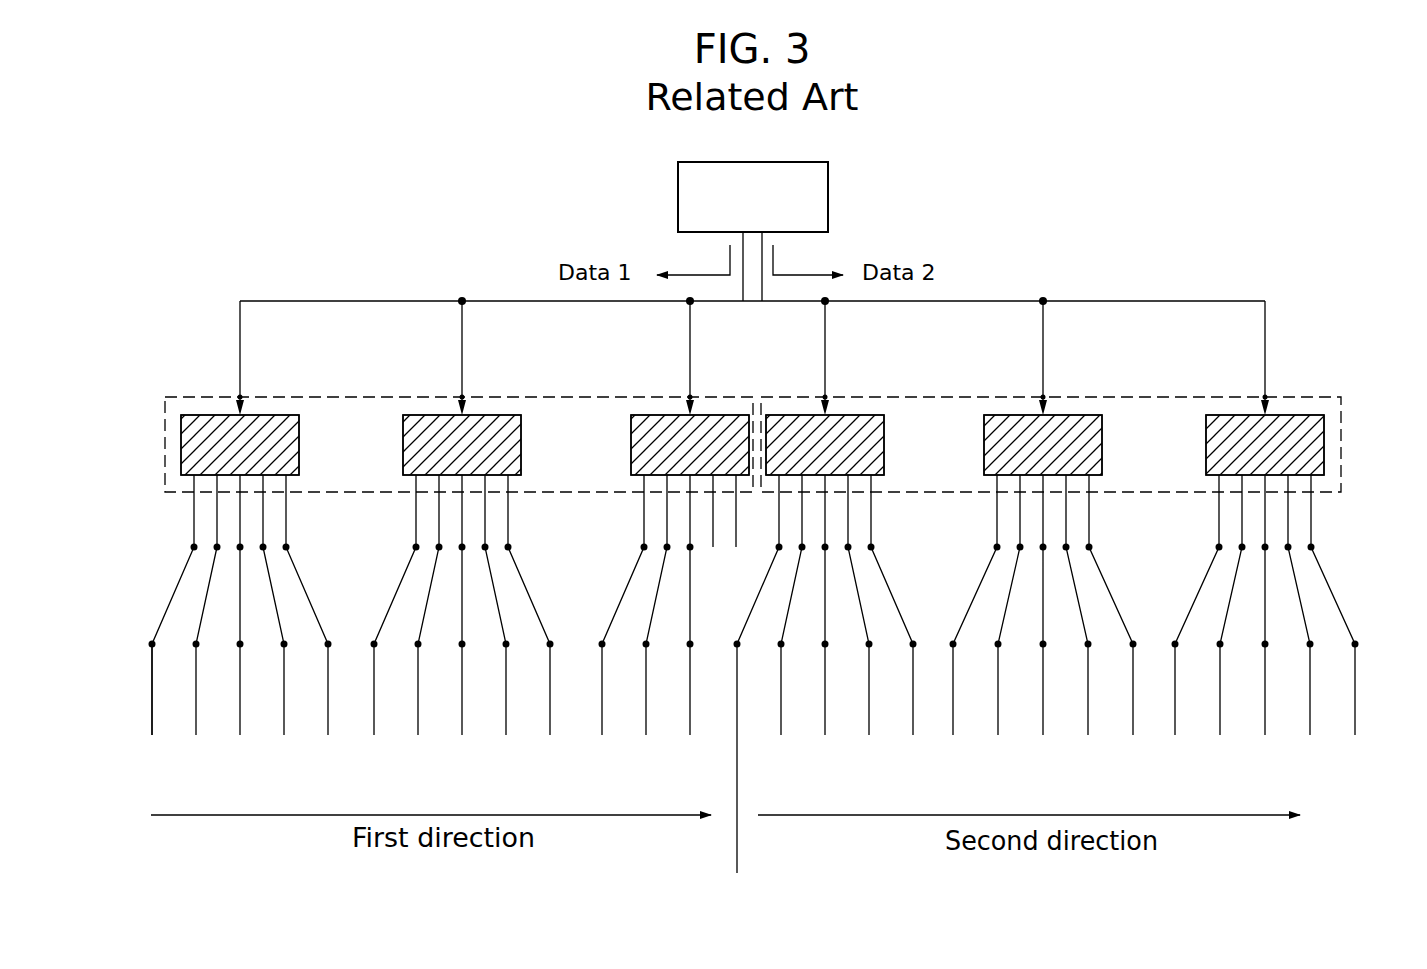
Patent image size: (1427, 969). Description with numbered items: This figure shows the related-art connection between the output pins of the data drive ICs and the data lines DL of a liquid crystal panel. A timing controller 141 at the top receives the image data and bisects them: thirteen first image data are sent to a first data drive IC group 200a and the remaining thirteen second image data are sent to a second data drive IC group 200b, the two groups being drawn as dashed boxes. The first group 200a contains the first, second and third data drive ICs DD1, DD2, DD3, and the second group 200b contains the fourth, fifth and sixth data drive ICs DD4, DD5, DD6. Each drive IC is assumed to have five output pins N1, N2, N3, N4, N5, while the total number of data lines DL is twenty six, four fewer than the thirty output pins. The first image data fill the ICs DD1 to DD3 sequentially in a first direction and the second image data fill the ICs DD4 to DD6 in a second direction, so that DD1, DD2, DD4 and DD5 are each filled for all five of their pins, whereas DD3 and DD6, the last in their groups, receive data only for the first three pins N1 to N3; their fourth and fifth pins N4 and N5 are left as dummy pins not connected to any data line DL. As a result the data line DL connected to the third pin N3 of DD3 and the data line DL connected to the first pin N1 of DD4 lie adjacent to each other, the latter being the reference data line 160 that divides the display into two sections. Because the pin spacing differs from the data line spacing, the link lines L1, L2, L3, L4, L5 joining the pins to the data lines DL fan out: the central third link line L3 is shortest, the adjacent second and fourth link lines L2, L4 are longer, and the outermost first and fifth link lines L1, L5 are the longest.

The timing controller 141 is at (828, 193).
The reference data line 160 is at (737, 852).
The first data drive IC group 200a is at (165, 397).
The second data drive IC group 200b is at (1341, 492).
The first data drive IC DD1 is at (289, 415).
The second data drive IC DD2 is at (511, 415).
The third data drive IC DD3 is at (739, 415).
The fourth data drive IC DD4 is at (874, 415).
The fifth data drive IC DD5 is at (1092, 415).
The sixth data drive IC DD6 is at (1314, 415).
The first output pin N1 is at (194, 497).
The second output pin N2 is at (217, 515).
The third output pin N3 is at (240, 533).
The fourth output pin N4 is at (263, 517).
The fifth output pin N5 is at (288, 500).
The first link line L1 is at (180, 577).
The second link line L2 is at (205, 600).
The third link line L3 is at (240, 630).
The fourth link line L4 is at (274, 598).
The fifth link line L5 is at (296, 568).
The data line DL is at (152, 693).